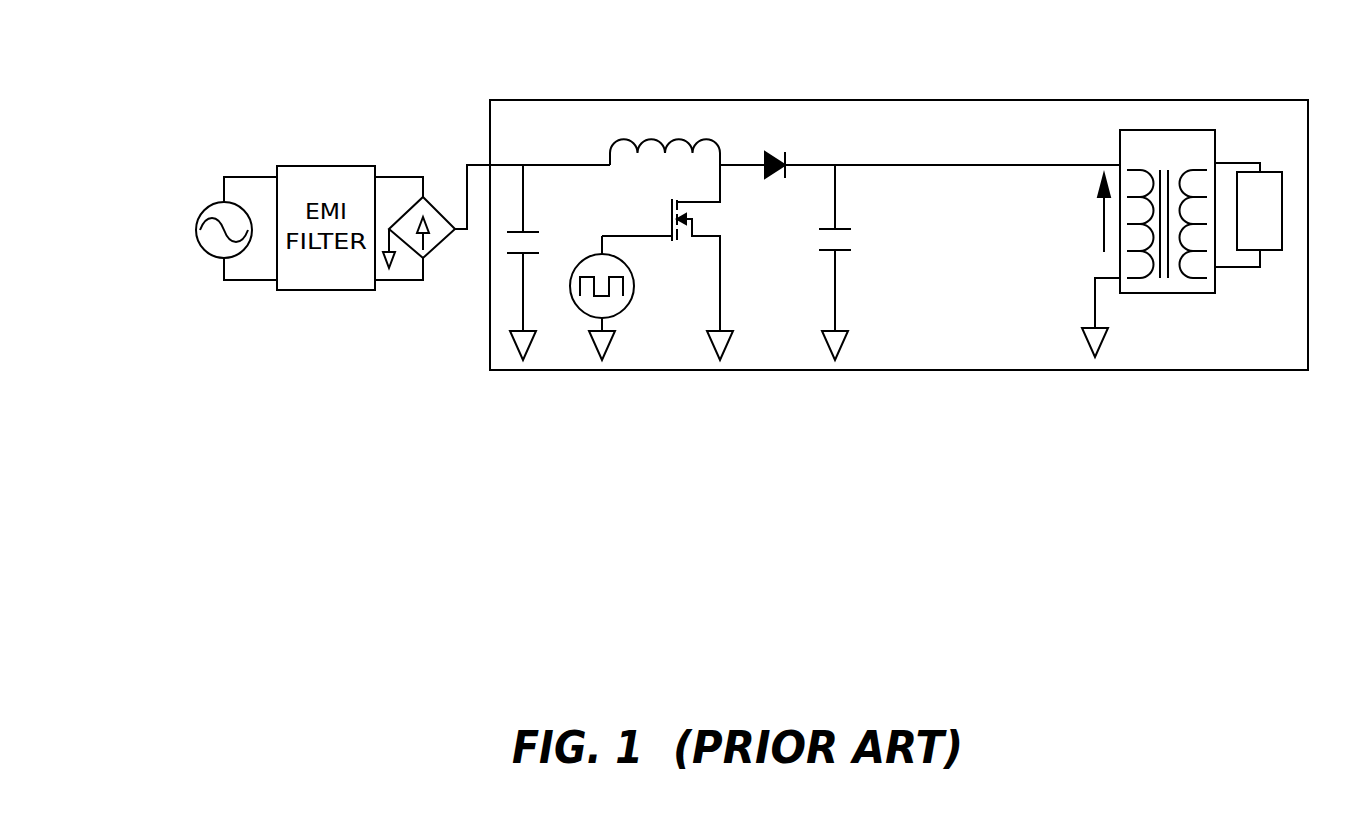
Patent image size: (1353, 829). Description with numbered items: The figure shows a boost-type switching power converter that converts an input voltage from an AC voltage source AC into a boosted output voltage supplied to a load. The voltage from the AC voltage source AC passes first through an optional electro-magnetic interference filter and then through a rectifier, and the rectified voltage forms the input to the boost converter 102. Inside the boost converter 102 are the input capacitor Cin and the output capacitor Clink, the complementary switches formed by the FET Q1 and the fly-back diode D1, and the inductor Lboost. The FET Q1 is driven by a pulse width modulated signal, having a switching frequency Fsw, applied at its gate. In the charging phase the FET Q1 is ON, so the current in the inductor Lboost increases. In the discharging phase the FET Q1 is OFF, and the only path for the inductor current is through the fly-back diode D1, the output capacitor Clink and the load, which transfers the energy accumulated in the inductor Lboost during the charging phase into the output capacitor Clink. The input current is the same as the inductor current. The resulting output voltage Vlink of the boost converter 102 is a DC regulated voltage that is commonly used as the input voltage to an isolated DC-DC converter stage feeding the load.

The boost converter 102 is at (863, 100).
The FET Q1 is at (667, 264).
The fly-back diode D1 is at (779, 151).
The input capacitor Cin is at (543, 262).
The output capacitor Clink is at (804, 262).
The inductor Lboost is at (720, 127).
The switching frequency Fsw is at (625, 298).
The output voltage Vlink is at (1079, 213).
The AC voltage source AC is at (198, 230).